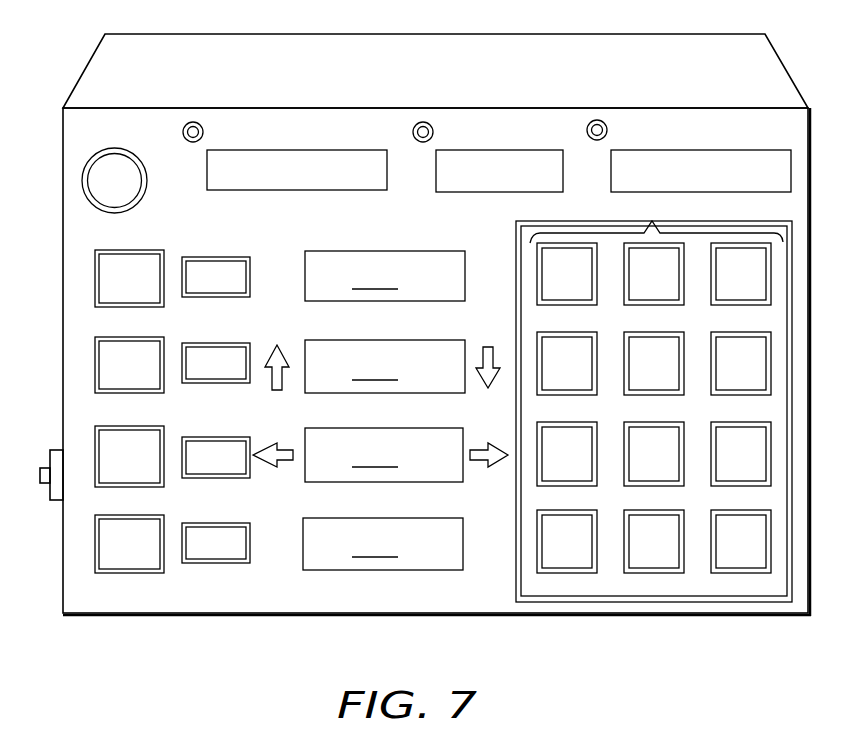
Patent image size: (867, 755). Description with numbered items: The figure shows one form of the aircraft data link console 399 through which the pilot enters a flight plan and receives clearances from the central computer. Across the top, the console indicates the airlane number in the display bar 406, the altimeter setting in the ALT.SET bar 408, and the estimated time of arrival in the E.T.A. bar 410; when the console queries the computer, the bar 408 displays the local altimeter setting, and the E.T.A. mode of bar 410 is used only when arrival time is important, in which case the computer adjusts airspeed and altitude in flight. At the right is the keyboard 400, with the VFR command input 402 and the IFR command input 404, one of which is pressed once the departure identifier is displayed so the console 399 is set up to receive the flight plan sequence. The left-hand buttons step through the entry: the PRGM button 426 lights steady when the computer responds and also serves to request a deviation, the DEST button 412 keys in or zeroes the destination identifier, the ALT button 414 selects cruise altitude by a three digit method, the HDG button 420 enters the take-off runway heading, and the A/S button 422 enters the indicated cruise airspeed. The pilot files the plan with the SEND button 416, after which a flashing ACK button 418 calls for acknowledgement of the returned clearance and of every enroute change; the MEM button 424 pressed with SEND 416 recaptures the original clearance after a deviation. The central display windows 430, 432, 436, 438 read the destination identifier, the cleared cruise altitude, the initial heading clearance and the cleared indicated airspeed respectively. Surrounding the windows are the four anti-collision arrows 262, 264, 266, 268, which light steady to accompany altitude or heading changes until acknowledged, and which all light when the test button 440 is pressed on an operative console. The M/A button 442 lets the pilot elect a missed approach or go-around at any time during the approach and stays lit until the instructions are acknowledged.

The data link console 399 is at (201, 52).
The M/A button 442 is at (118, 182).
The display bar 406 is at (347, 129).
The ALT.SET window 408 is at (528, 130).
The E.T.A. bar 410 is at (663, 130).
The keyboard 400 is at (654, 398).
The VFR command input 402 is at (666, 520).
The IFR command input 404 is at (754, 520).
The PRGM button 426 is at (127, 256).
The SEND button 416 is at (124, 343).
The ACK button 418 is at (120, 440).
The MEM button 424 is at (134, 558).
The DEST button 412 is at (244, 262).
The ALT button 414 is at (245, 348).
The HDG button 420 is at (244, 440).
The A/S button 422 is at (240, 533).
The test button 440 is at (82, 474).
The display window 430 is at (385, 276).
The display window 432 is at (385, 366).
The display window 436 is at (384, 455).
The display window 438 is at (383, 544).
The anti-collision arrow 262 is at (280, 344).
The anti-collision arrow 264 is at (490, 347).
The anti-collision arrow 266 is at (280, 462).
The anti-collision arrow 268 is at (498, 462).